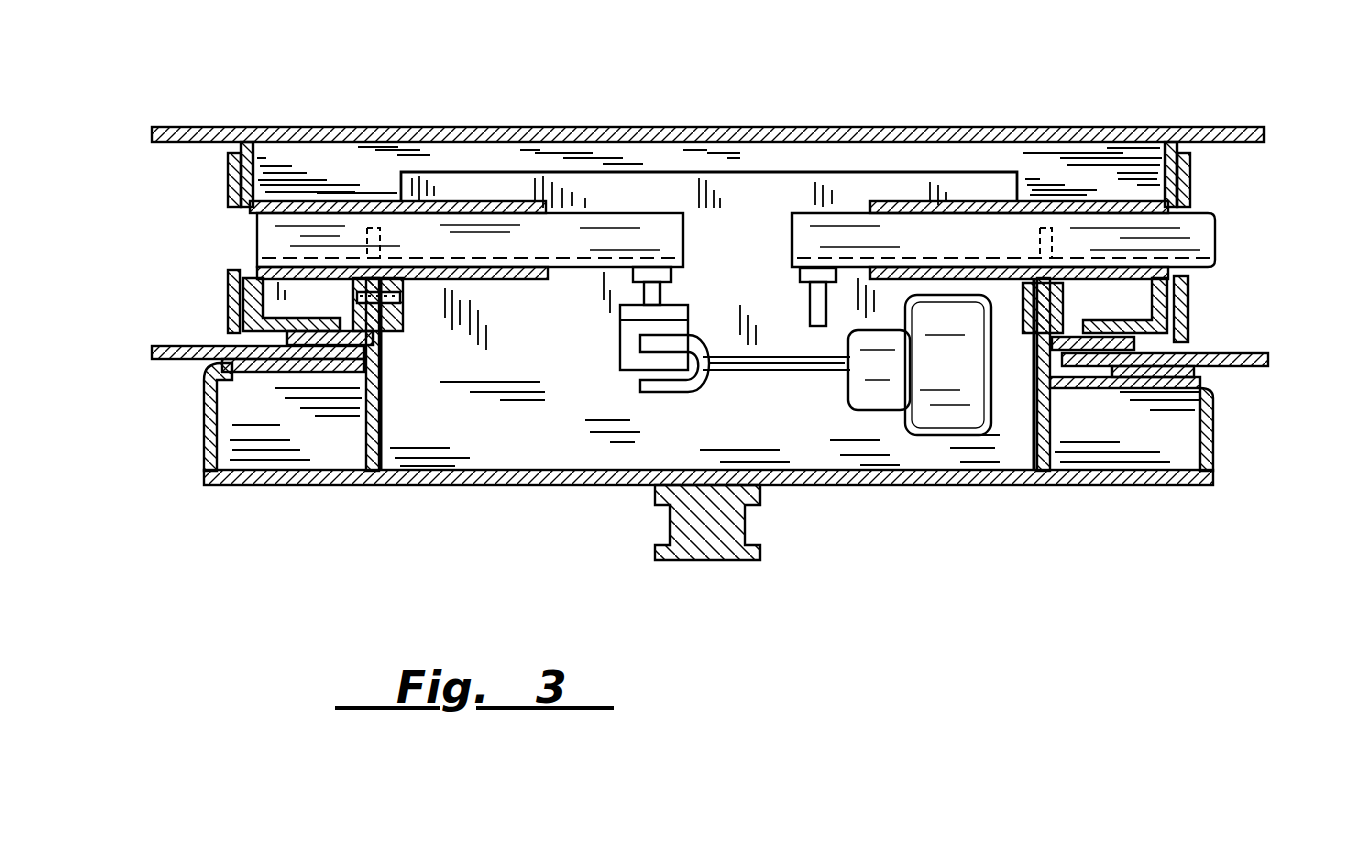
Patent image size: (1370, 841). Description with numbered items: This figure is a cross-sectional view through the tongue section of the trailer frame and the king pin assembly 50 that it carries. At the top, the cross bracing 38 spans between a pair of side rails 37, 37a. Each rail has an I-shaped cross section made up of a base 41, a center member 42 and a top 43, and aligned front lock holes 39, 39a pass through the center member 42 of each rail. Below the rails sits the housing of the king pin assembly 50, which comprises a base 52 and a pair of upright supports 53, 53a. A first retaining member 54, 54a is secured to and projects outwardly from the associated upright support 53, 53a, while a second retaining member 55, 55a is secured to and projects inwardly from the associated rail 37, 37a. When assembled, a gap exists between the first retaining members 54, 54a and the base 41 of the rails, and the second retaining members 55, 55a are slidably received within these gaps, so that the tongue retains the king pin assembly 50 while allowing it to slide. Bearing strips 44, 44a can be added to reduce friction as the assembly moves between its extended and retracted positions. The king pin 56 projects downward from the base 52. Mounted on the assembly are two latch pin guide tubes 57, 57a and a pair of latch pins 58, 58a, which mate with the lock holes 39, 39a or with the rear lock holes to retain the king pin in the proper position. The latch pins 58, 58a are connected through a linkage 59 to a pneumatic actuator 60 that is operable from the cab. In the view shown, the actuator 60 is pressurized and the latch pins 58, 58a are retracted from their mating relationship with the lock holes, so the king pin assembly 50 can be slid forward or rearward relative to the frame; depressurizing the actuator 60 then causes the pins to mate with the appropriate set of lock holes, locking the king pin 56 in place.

The side rail 37 is at (195, 115).
The side rail 37a is at (1232, 113).
The cross bracing 38 is at (663, 128).
The front lock hole 39 is at (246, 203).
The front lock hole 39a is at (1192, 190).
The base 41 is at (157, 359).
The center member 42 is at (240, 150).
The top 43 is at (279, 129).
The bearing strip 44 is at (212, 363).
The bearing strip 44a is at (1208, 374).
The king pin assembly 50 is at (432, 515).
The base 52 is at (835, 486).
The upright support 53 is at (380, 430).
The upright support 53a is at (1052, 430).
The first retaining member 54 is at (385, 345).
The first retaining member 54a is at (1053, 343).
The second retaining member 55 is at (228, 296).
The second retaining member 55a is at (1190, 303).
The king pin 56 is at (706, 562).
The latch pin guide tube 57 is at (505, 288).
The latch pin guide tube 57a is at (1003, 292).
The latch pin 58 is at (470, 240).
The latch pin 58a is at (1003, 240).
The linkage 59 is at (800, 372).
The pneumatic actuator 60 is at (919, 365).